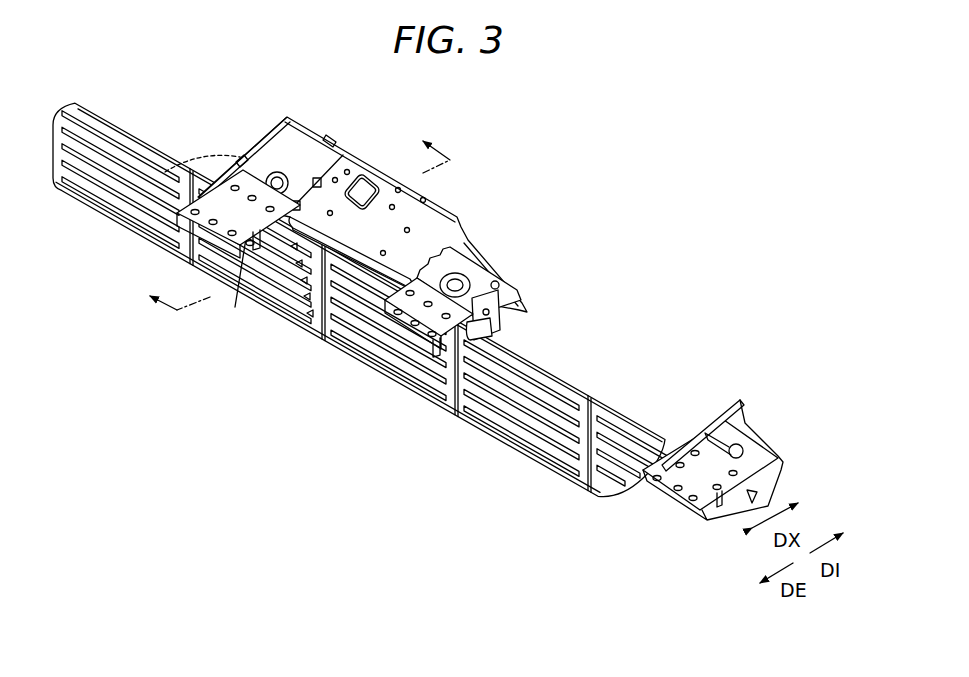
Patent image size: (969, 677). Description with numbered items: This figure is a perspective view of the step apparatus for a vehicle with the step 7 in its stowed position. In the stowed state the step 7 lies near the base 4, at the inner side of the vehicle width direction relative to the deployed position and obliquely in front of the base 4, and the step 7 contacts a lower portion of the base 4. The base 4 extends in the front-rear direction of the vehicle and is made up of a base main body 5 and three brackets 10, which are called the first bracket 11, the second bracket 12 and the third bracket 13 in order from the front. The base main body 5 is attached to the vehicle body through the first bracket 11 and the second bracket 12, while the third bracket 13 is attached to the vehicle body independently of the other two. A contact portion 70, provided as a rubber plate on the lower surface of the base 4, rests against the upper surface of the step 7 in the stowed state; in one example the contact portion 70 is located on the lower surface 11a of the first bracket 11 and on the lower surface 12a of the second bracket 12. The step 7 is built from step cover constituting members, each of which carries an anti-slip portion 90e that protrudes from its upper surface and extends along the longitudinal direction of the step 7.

The base 4 is at (391, 156).
The base main body 5 is at (361, 167).
The step 7 is at (364, 370).
The bracket 10 is at (495, 306).
The first bracket 11 is at (307, 147).
The lower surface of first bracket 11a is at (314, 229).
The second bracket 12 is at (473, 270).
The lower surface of second bracket 12a is at (492, 337).
The third bracket 13 is at (753, 453).
The contact portion 70 is at (240, 293).
The anti-slip portion 90e is at (311, 313).